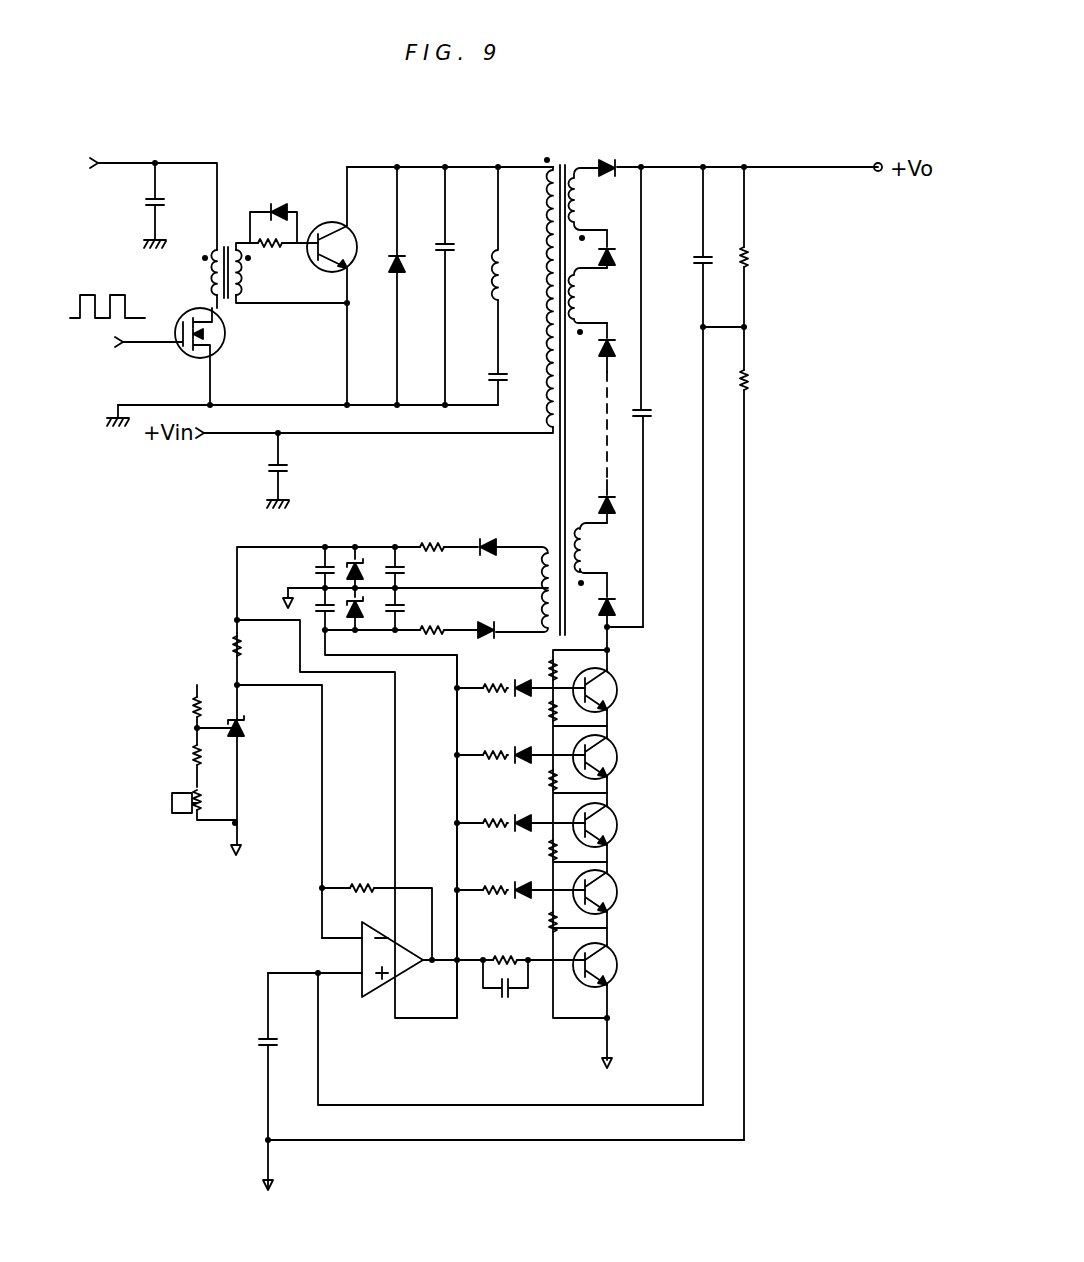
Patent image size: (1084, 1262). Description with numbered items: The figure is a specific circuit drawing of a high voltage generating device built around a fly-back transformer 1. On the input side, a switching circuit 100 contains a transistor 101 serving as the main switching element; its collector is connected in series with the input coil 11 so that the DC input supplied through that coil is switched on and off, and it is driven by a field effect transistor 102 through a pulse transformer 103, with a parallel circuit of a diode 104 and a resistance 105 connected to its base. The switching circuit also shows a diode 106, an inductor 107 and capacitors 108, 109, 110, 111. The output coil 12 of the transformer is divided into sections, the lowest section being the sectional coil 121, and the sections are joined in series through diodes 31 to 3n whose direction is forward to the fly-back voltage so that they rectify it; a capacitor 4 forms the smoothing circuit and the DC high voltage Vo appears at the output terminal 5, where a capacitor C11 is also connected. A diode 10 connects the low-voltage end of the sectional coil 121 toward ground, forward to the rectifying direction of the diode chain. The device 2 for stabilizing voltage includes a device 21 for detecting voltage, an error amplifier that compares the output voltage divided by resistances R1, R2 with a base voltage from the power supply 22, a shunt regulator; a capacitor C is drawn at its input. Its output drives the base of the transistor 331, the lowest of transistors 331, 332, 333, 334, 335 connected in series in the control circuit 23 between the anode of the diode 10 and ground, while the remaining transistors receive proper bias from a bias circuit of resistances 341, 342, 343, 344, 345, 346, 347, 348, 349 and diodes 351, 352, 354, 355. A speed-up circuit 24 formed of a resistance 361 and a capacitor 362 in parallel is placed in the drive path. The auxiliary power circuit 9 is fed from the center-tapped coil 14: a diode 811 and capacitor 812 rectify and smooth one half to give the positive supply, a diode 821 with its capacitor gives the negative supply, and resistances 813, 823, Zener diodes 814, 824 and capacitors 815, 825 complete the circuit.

The switching circuit 100 is at (408, 157).
The transistor 101 is at (330, 224).
The field effect transistor 102 is at (222, 345).
The pulse transformer 103 is at (226, 246).
The diode 104 is at (277, 204).
The resistance 105 is at (272, 250).
The diode 106 is at (413, 286).
The inductor 107 is at (492, 276).
The capacitor 108 is at (452, 243).
The capacitor 109 is at (490, 374).
The capacitor 110 is at (292, 472).
The capacitor 111 is at (147, 199).
The fly-back transformer 1 is at (570, 152).
The input coil 11 is at (546, 372).
The output coil 12 is at (608, 305).
The sectional coil 121 is at (590, 548).
The coil for auxiliary power supply 14 is at (541, 572).
The diode 3n is at (608, 160).
The diode 31 is at (615, 505).
The diode 10 is at (615, 605).
The capacitor 4 is at (652, 415).
The output terminal 5 is at (878, 183).
The capacitor C11 is at (700, 266).
The resistance R1 is at (760, 247).
The resistance R2 is at (760, 733).
The auxiliary power circuit 9 is at (432, 511).
The diode 811 is at (485, 540).
The capacitor 812 is at (399, 578).
The resistance 813 is at (430, 545).
The Zener diode 814 is at (357, 560).
The capacitor 815 is at (320, 566).
The diode 821 is at (475, 626).
The resistance 823 is at (407, 612).
The Zener diode 824 is at (352, 619).
The capacitor 825 is at (318, 612).
The power supply of base voltage 22 is at (168, 733).
The device for stabilizing voltage 2 is at (508, 1102).
The device for detecting voltage 21 is at (362, 988).
The control circuit 23 is at (445, 766).
The circuit for speed-up 24 is at (484, 1002).
The capacitor C is at (256, 1046).
The transistor 331 is at (620, 975).
The transistor 332 is at (620, 905).
The transistor 333 is at (620, 838).
The transistor 334 is at (620, 770).
The transistor 335 is at (620, 695).
The resistance 341 is at (560, 928).
The resistance 342 is at (560, 855).
The resistance 343 is at (560, 788).
The resistance 344 is at (560, 720).
The resistance 345 is at (560, 657).
The resistance 346 is at (493, 893).
The resistance 347 is at (492, 828).
The resistance 348 is at (489, 760).
The resistance 349 is at (482, 694).
The diode 351 is at (522, 883).
The diode 352 is at (522, 815).
The diode 354 is at (522, 747).
The diode 355 is at (520, 680).
The resistance 361 is at (503, 960).
The capacitor 362 is at (503, 999).